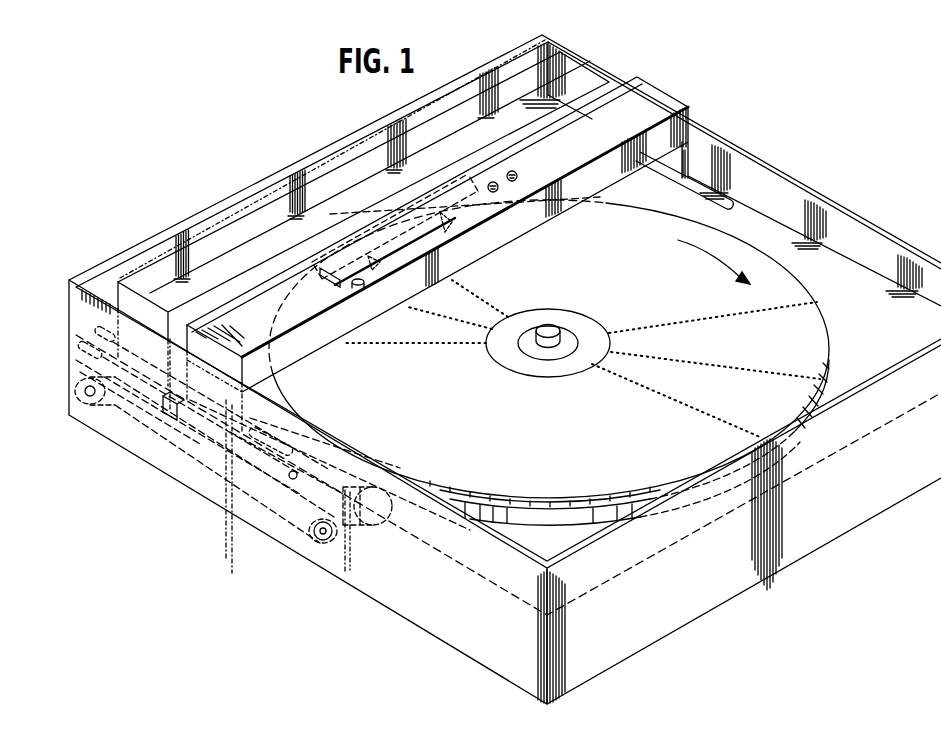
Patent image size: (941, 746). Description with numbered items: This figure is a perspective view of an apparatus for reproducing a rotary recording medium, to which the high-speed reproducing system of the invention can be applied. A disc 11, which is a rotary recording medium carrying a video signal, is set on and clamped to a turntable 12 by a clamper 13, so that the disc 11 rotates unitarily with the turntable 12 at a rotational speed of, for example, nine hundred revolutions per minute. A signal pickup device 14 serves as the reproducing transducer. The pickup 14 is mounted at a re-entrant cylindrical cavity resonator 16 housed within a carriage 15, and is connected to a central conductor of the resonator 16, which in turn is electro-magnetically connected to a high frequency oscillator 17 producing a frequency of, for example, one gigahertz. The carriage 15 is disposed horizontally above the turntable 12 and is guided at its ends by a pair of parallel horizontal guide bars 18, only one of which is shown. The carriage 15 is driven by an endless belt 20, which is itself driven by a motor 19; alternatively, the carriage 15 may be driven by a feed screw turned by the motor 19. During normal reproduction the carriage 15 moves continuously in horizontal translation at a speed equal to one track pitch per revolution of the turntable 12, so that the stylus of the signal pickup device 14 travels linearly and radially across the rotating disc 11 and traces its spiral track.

The disc 11 is at (828, 338).
The turntable 12 is at (528, 517).
The clamper 13 is at (538, 357).
The signal pickup device 14 is at (397, 262).
The carriage 15 is at (330, 170).
The re-entrant cylindrical cavity resonator 16 is at (500, 240).
The high frequency oscillator 17 is at (590, 183).
The guide bars 18 is at (267, 453).
The motor 19 is at (395, 487).
The endless belt 20 is at (297, 500).